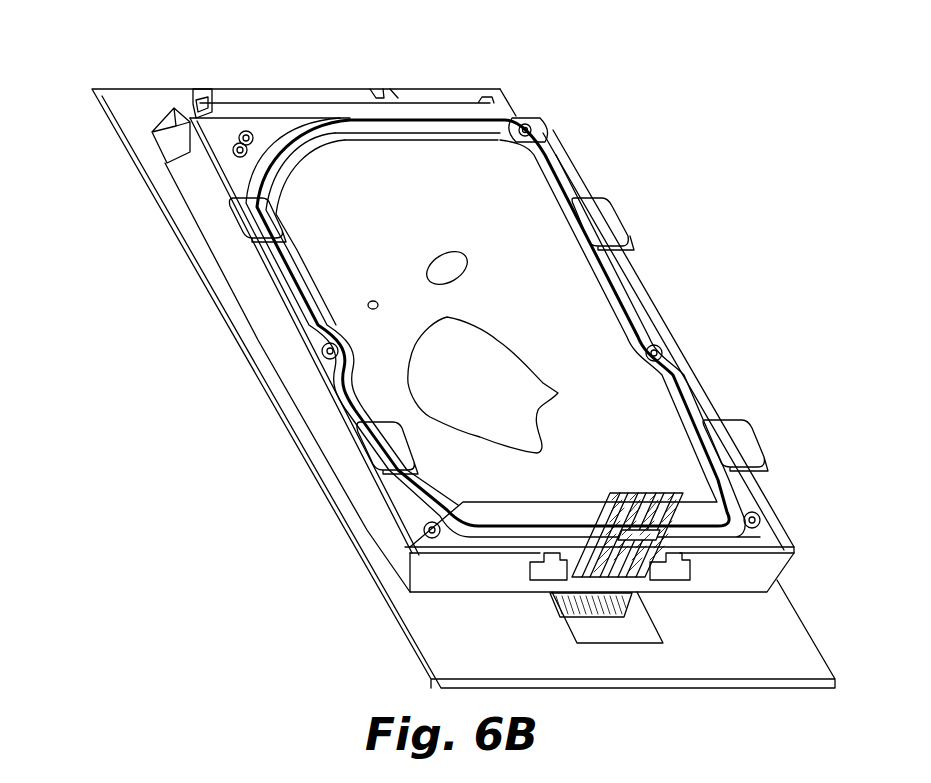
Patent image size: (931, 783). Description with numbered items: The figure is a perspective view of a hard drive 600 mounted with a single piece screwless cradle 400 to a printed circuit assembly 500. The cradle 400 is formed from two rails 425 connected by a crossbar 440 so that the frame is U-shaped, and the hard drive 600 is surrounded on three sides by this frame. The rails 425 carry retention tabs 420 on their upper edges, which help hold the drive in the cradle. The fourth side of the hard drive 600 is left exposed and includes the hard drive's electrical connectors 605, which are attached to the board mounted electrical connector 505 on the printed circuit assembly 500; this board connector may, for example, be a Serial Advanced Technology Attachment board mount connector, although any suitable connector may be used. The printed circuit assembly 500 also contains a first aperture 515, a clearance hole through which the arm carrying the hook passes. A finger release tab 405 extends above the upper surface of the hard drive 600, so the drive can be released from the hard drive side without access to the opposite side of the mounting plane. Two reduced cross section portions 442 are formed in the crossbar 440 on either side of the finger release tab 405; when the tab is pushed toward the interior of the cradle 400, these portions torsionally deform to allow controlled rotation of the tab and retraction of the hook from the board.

The cradle 400 is at (357, 467).
The finger release tab 405 is at (630, 492).
The retention tab 420 is at (607, 213).
The rail 425 is at (262, 340).
The crossbar 440 is at (470, 573).
The reduced cross section portion 442 is at (664, 580).
The printed circuit assembly 500 is at (124, 112).
The board mounted electrical connector 505 is at (188, 102).
The first aperture 515 is at (620, 645).
The hard drive 600 is at (603, 293).
The hard drive electrical connectors 605 is at (278, 113).